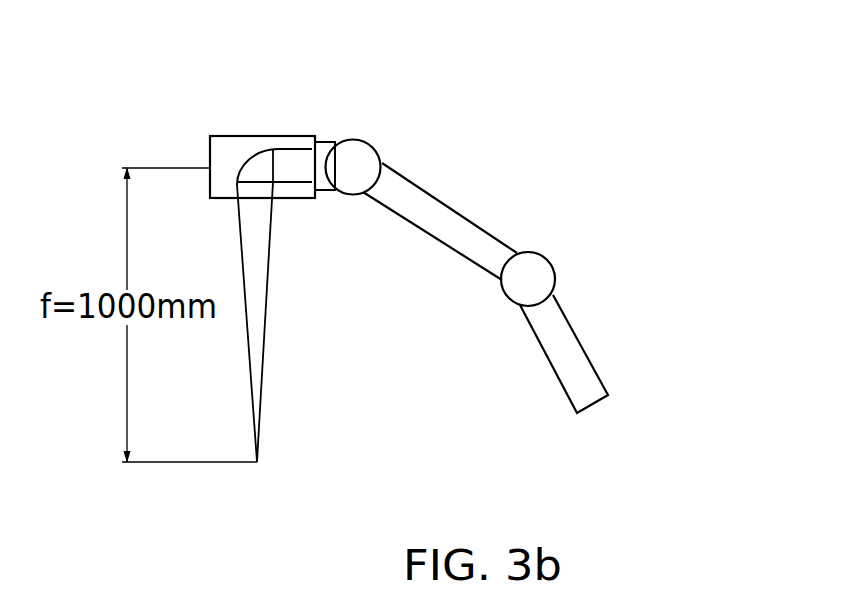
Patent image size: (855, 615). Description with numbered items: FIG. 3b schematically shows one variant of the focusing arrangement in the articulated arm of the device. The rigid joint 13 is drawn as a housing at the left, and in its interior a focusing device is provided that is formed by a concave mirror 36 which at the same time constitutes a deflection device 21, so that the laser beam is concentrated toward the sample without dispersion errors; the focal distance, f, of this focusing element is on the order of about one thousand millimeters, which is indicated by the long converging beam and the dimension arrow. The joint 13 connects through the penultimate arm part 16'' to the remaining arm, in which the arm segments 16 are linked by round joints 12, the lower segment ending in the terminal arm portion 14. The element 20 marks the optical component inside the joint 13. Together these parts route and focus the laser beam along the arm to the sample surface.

The joint 12 is at (377, 137).
The rigid joint 13 is at (218, 133).
The arm end / hand 14 is at (597, 357).
The arm segment 16 is at (464, 267).
The penultimate arm part 16'' is at (371, 101).
The optical element 20 is at (280, 133).
The deflection device 21 is at (232, 173).
The concave mirror 36 is at (273, 182).